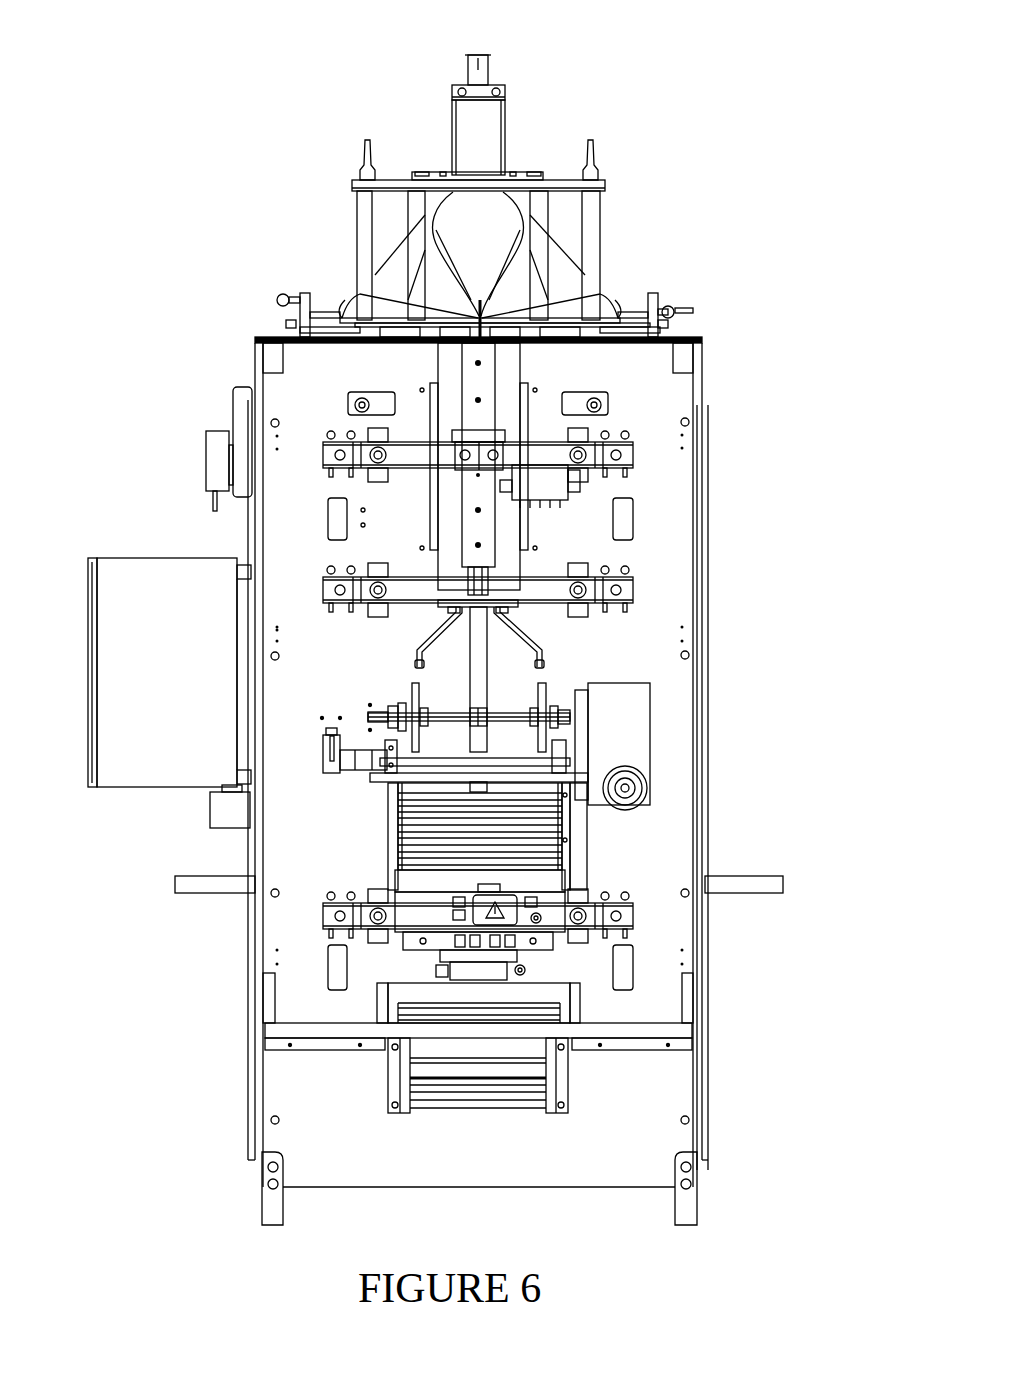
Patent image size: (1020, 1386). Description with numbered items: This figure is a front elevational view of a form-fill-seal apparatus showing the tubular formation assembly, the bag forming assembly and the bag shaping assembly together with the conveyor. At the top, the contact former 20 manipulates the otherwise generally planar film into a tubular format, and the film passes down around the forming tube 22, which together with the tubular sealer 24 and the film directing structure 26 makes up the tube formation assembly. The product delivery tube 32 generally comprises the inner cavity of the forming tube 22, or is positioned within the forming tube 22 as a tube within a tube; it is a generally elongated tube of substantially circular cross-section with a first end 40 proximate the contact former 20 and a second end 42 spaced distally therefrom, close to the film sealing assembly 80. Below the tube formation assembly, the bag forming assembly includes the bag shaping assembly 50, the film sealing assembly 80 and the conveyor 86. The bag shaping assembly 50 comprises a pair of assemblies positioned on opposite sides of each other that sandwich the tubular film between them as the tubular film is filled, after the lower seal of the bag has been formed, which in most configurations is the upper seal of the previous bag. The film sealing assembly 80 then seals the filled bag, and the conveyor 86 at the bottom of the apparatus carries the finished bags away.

The first end 40 is at (480, 55).
The forming tube 22 is at (505, 120).
The contact former 20 is at (565, 275).
The tubular sealer 24 is at (485, 513).
The product delivery tube 32 is at (487, 648).
The film directing structure 26 is at (393, 697).
The second end 42 is at (483, 787).
The bag shaping assembly 50 is at (388, 835).
The film sealing assembly 80 is at (305, 925).
The conveyor 86 is at (383, 1083).